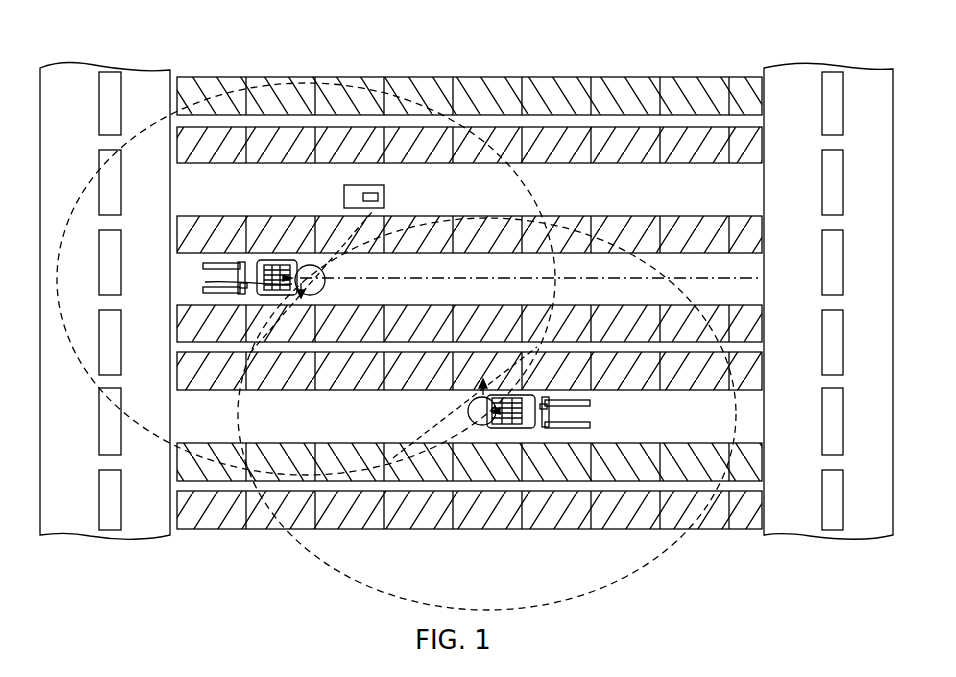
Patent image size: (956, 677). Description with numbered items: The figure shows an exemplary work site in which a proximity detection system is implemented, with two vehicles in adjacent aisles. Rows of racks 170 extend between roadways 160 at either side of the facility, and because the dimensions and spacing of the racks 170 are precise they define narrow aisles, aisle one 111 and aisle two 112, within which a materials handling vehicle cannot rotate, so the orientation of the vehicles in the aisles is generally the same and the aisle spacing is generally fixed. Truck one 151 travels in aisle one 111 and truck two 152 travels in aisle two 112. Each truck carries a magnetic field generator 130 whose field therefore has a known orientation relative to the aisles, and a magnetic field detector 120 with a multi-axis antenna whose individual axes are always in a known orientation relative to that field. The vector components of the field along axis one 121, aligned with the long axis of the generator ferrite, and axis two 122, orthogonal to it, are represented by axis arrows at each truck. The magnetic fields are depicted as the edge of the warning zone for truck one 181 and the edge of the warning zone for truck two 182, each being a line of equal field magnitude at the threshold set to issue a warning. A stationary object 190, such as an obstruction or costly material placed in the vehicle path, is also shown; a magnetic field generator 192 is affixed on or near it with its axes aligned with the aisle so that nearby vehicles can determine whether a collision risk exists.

The aisle one 111 is at (750, 292).
The aisle two 112 is at (300, 417).
The magnetic field detector 120 is at (323, 273).
The axis one 121 is at (528, 356).
The axis two 122 is at (303, 297).
The magnetic field generator 130 is at (303, 262).
The truck one 151 is at (268, 262).
The truck two 152 is at (493, 395).
The roadways 160 is at (107, 112).
The racks 170 is at (700, 97).
The edge of warning zone for truck one 181 is at (520, 185).
The edge of warning zone for truck two 182 is at (378, 596).
The stationary object 190 is at (344, 196).
The magnetic field generator of stationary object 192 is at (380, 197).